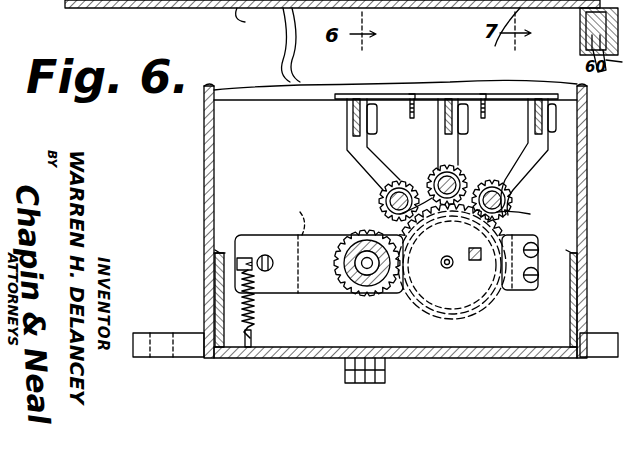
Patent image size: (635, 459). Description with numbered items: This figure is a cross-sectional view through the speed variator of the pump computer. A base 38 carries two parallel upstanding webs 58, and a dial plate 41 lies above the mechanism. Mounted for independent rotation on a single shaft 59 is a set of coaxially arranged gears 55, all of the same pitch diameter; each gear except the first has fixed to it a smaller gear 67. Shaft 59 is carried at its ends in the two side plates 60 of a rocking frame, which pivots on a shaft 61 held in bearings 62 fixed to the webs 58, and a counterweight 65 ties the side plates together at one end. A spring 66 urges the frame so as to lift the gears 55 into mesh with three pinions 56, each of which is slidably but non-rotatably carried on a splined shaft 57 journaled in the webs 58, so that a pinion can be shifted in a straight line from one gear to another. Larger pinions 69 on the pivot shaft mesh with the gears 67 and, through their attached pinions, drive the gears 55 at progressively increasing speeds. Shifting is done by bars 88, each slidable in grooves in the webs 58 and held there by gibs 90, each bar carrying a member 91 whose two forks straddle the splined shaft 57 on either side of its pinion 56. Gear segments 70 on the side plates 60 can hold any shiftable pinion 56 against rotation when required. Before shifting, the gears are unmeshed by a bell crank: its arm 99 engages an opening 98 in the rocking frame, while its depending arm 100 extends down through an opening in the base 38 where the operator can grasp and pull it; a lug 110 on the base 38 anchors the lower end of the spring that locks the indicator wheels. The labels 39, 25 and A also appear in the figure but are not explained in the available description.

The base 38 is at (128, 8).
The lug 110 is at (255, 21).
The depending arm 100 is at (282, 38).
The dial plate 41 is at (252, 90).
The spring 66 is at (255, 303).
The side plates 60 is at (316, 286).
The gibs 90 is at (378, 95).
The gears 55 is at (506, 292).
The smaller gear 67 is at (466, 312).
The upstanding webs 58 is at (190, 196).
The housing side wall 39 is at (206, 140).
The bar 88 is at (353, 118).
The member 91 is at (358, 164).
The pinions 56 is at (400, 200).
The splined shaft 57 is at (390, 204).
The counterweight 65 is at (319, 248).
The bearings 62 is at (356, 262).
The gear segment 70 is at (436, 249).
The opening 98 is at (472, 248).
The arm 99 is at (473, 261).
The shaft 59 is at (447, 268).
The shaft 61 is at (362, 288).
The larger pinion 69 is at (372, 294).
The base 25 is at (345, 378).
The assembly A is at (550, 333).